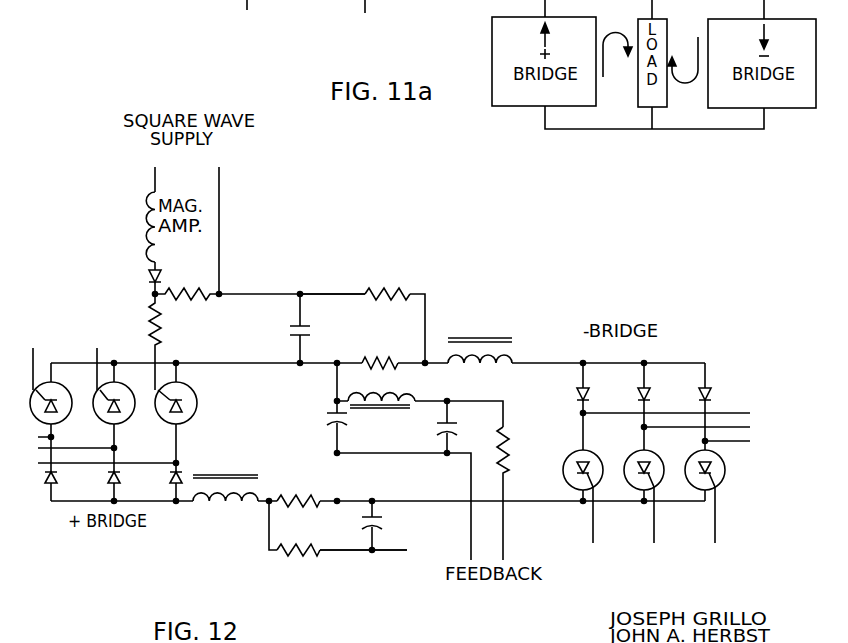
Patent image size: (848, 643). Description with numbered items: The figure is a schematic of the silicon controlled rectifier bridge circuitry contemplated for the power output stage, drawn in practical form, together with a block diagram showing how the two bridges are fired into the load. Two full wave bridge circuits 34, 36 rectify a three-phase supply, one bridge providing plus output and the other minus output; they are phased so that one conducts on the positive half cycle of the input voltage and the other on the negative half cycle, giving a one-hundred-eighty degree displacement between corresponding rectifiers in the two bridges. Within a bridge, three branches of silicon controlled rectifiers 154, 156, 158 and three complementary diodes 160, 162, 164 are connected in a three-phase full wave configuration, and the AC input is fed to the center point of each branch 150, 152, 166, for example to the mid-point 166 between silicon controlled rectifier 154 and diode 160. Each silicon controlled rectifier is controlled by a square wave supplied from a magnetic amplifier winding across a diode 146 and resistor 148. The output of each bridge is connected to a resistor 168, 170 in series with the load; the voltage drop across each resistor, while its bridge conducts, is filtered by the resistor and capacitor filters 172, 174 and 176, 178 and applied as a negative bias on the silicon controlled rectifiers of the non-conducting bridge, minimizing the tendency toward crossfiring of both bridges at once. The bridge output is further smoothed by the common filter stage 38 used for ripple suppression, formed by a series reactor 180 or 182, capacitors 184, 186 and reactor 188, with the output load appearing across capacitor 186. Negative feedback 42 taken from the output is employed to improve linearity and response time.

The silicon controlled rectifier bridge circuit 34 is at (236, 426).
The silicon controlled rectifier bridge circuit 36 is at (643, 451).
The common filter stage 38 is at (333, 301).
The negative feedback 42 is at (485, 534).
The diode 146 is at (149, 273).
The resistor 148 is at (152, 325).
The center point of branch 150 is at (642, 427).
The center point of branch 152 is at (703, 441).
The silicon controlled rectifier 154 is at (575, 492).
The silicon controlled rectifier 156 is at (636, 492).
The silicon controlled rectifier 158 is at (697, 492).
The complementary diode 160 is at (592, 396).
The complementary diode 162 is at (654, 396).
The complementary diode 164 is at (716, 396).
The mid-point 166 is at (580, 413).
The resistor 168 is at (299, 488).
The resistor 170 is at (382, 352).
The filter resistor 172 is at (393, 294).
The filter capacitor 174 is at (290, 328).
The filter resistor 176 is at (302, 560).
The filter capacitor 178 is at (394, 525).
The series reactor 180 is at (258, 486).
The series reactor 182 is at (507, 353).
The capacitor 184 is at (325, 410).
The capacitor 186 is at (452, 428).
The reactor 188 is at (419, 408).